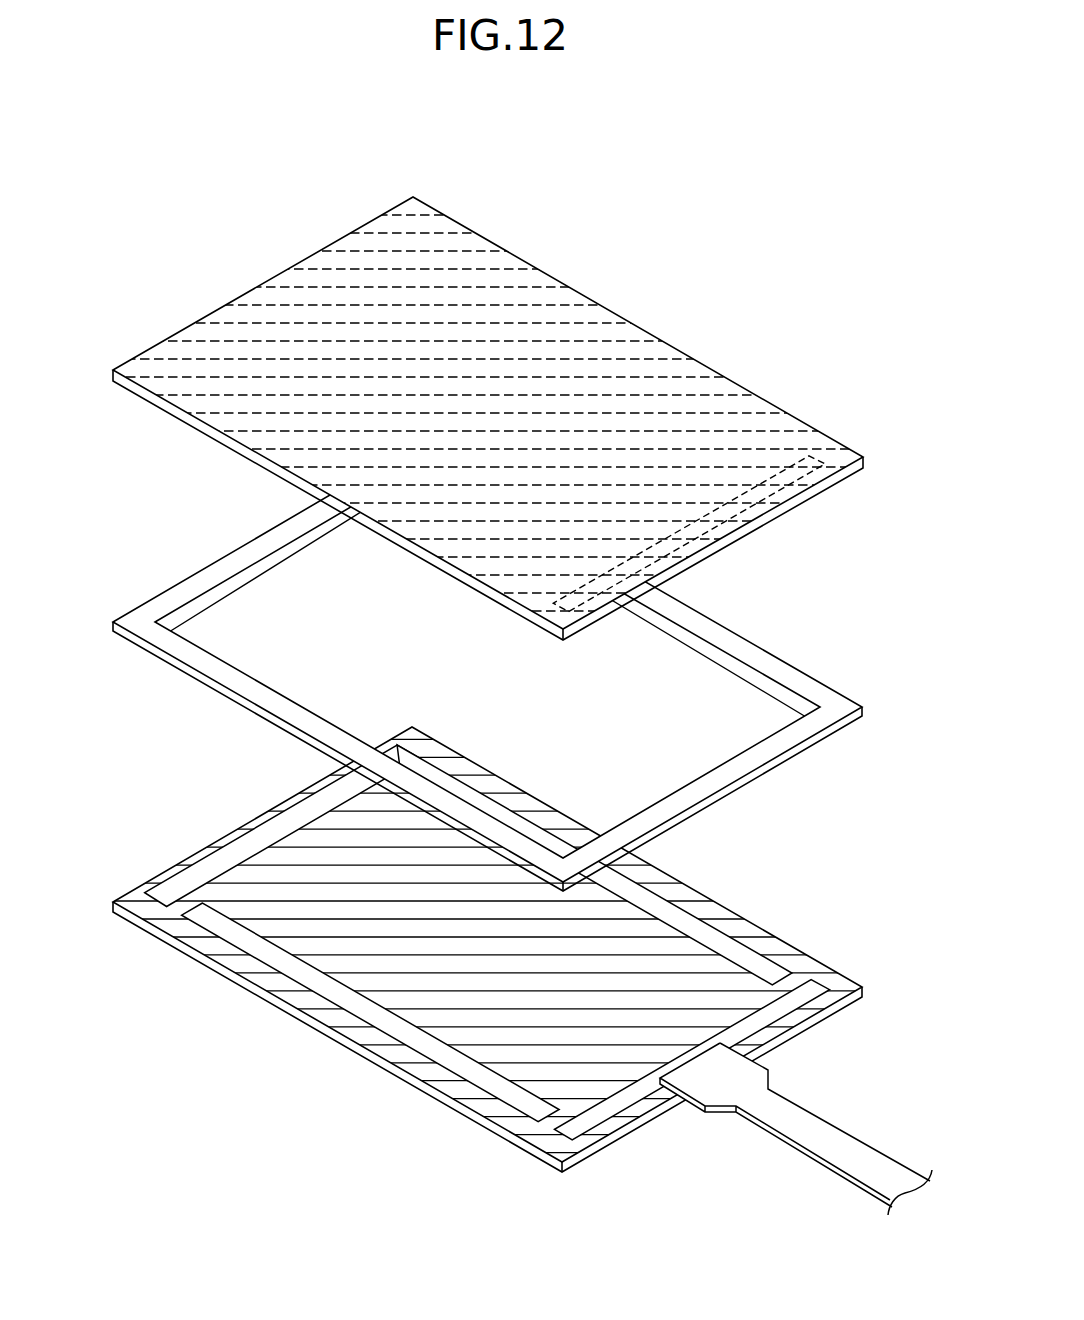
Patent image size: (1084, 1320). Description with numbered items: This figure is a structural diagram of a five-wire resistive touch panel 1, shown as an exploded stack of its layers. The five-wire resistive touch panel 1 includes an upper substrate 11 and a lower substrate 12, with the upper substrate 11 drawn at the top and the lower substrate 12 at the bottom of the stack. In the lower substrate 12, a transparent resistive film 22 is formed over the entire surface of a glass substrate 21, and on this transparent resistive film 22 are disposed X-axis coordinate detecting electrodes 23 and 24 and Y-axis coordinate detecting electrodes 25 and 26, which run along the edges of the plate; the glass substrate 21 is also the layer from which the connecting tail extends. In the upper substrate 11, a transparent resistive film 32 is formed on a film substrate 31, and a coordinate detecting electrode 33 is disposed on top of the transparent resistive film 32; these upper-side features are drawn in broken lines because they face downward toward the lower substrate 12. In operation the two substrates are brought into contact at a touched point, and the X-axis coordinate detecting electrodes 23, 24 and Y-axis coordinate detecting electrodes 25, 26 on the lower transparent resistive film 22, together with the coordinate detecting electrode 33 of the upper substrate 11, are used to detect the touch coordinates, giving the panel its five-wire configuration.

The five-wire resistive touch panel 1 is at (70, 199).
The upper substrate 11 is at (542, 418).
The lower substrate 12 is at (542, 971).
The glass substrate 21 is at (514, 1142).
The transparent resistive film 22 is at (688, 962).
The X-axis coordinate detecting electrode 23 is at (215, 868).
The X-axis coordinate detecting electrode 24 is at (775, 1013).
The Y-axis coordinate detecting electrode 25 is at (316, 988).
The Y-axis coordinate detecting electrode 26 is at (675, 913).
The film substrate 31 is at (457, 246).
The transparent resistive film 32 is at (733, 440).
The coordinate detecting electrode 33 is at (800, 507).